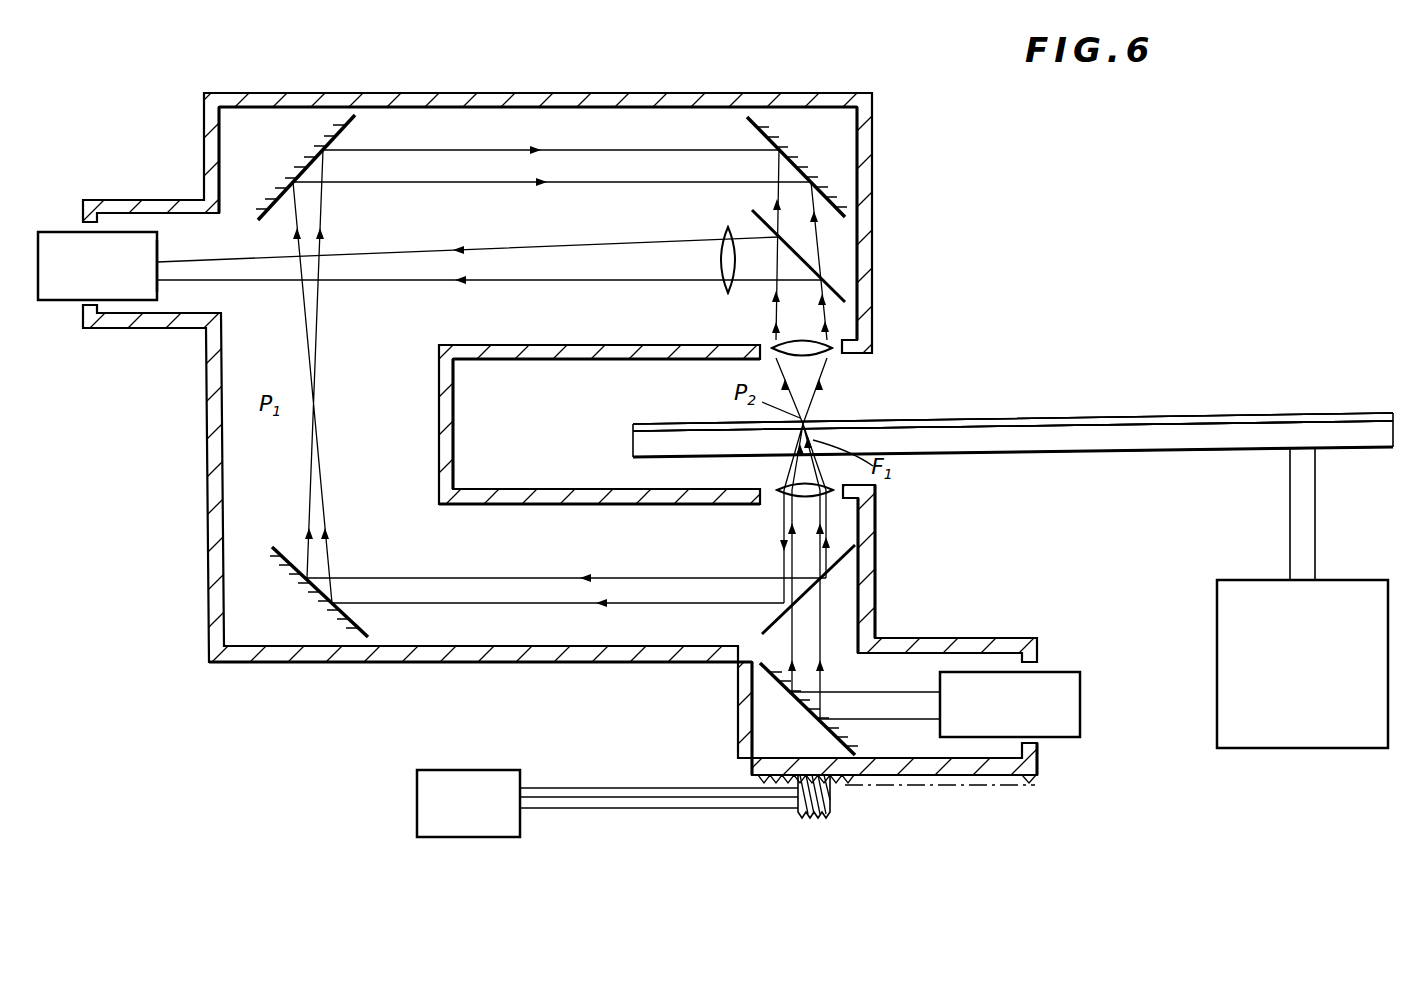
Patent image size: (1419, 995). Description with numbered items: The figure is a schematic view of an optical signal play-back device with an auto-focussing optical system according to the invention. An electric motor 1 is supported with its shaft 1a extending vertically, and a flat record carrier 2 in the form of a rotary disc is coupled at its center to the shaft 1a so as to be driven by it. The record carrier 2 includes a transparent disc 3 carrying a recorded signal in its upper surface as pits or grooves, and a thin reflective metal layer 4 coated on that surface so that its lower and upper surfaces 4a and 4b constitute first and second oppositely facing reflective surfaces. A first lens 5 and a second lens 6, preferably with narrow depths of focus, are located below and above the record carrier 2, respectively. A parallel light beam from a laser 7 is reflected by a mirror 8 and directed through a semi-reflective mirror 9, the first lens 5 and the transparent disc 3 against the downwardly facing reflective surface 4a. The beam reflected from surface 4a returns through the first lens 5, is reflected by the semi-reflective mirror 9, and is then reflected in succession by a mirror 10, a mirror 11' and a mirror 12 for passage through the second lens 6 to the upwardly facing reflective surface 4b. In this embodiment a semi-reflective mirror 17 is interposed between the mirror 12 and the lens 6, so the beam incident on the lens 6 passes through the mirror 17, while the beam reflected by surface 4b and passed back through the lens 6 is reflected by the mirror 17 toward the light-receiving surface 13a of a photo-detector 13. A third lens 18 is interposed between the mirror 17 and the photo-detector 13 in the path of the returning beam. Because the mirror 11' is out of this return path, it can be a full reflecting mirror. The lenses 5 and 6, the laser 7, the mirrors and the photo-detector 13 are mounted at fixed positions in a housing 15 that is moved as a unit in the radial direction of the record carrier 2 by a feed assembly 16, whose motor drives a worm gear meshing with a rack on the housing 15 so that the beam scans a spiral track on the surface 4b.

The electric motor 1 is at (1222, 703).
The shaft 1a is at (1303, 537).
The record carrier 2 is at (1237, 390).
The transparent disc 3 is at (1228, 430).
The reflective metal layer 4 is at (1192, 414).
The first reflective surface 4a is at (1060, 434).
The second reflective surface 4b is at (997, 414).
The first lens 5 is at (835, 498).
The second lens 6 is at (824, 358).
The laser 7 is at (1082, 725).
The mirror 8 is at (758, 662).
The semi-reflective mirror 9 is at (822, 558).
The mirror 10 is at (282, 545).
The mirror 11' is at (331, 167).
The mirror 12 is at (826, 203).
The photo-detector 13 is at (85, 302).
The light-receiving surface 13a is at (158, 292).
The housing 15 is at (207, 531).
The feed assembly 16 is at (632, 790).
The semi-reflective mirror 17 is at (832, 287).
The third lens 18 is at (718, 285).